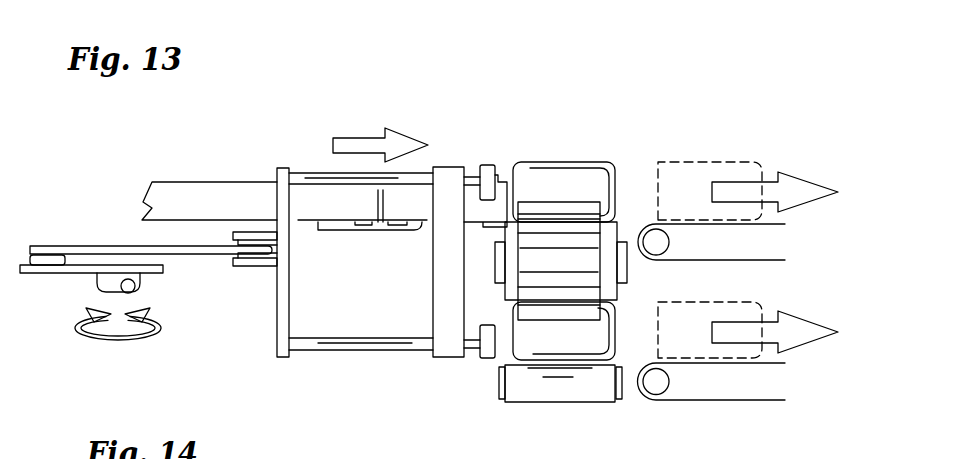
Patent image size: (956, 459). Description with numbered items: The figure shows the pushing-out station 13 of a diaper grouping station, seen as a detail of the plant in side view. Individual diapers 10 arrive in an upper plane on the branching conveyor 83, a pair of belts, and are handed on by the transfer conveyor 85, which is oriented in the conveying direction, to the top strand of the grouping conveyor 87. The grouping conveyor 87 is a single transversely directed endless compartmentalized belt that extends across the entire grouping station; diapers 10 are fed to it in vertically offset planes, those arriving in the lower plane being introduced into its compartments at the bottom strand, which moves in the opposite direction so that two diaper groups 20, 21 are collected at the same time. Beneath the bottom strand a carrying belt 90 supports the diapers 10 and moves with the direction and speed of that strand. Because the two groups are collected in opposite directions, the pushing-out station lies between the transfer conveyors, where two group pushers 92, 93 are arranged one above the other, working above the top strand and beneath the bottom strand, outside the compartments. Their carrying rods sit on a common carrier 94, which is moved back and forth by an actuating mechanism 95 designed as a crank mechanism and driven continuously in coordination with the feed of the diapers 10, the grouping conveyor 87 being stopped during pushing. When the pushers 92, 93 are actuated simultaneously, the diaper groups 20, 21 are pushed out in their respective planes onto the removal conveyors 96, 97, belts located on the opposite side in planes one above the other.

The pushing-out station detail 13 is at (652, 80).
The branching conveyor 83 is at (220, 167).
The common carrier 94 is at (282, 168).
The transfer conveyor 85 is at (403, 200).
The group pusher 92 is at (488, 162).
The group pusher 93 is at (489, 352).
The grouping conveyor 87 is at (592, 180).
The diaper 10 is at (557, 192).
The carrying belt 90 is at (525, 390).
The actuating mechanism 95 is at (181, 290).
The removal conveyor 96 is at (698, 230).
The removal conveyor 97 is at (735, 387).
The diaper group 20 is at (718, 157).
The diaper group 21 is at (768, 297).